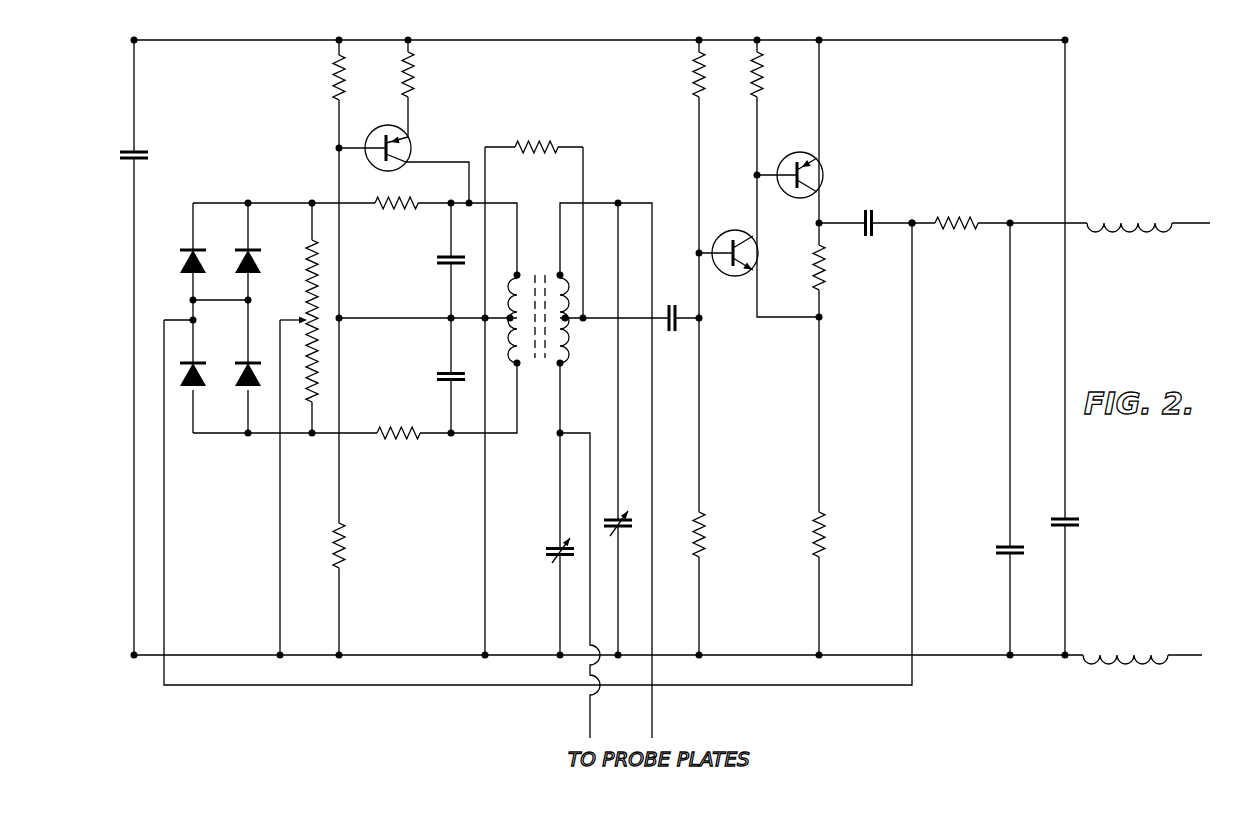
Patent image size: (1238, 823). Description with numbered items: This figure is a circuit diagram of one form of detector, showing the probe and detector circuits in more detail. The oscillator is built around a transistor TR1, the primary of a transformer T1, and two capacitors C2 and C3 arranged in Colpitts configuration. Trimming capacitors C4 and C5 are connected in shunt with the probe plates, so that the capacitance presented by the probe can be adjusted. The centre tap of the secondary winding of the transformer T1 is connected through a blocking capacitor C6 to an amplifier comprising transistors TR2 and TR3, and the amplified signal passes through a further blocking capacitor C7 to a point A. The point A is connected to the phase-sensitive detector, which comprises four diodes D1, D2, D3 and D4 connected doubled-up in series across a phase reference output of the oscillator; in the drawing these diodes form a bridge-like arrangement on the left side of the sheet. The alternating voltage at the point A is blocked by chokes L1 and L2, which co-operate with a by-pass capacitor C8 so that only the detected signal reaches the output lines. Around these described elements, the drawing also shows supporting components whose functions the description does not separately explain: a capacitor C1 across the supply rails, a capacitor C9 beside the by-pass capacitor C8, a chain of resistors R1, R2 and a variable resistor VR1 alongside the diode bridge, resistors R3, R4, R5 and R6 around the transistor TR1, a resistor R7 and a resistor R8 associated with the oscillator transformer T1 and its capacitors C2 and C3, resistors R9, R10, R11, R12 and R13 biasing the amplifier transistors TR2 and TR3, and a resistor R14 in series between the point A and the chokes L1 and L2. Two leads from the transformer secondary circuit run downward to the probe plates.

The capacitor C1 is at (143, 153).
The capacitor C2 is at (436, 266).
The capacitor C3 is at (438, 372).
The trimming capacitor C4 is at (546, 548).
The trimming capacitor C5 is at (628, 530).
The blocking capacitor C6 is at (667, 306).
The further blocking capacitor C7 is at (865, 210).
The by-pass capacitor C8 is at (996, 550).
The capacitor C9 is at (1076, 528).
The resistor R1 is at (300, 262).
The resistor R2 is at (305, 400).
The resistor R3 is at (333, 88).
The resistor R4 is at (344, 546).
The resistor R5 is at (413, 80).
The resistor R6 is at (378, 212).
The resistor R7 is at (400, 428).
The resistor R8 is at (539, 146).
The resistor R9 is at (696, 86).
The resistor R10 is at (762, 78).
The resistor R11 is at (707, 540).
The resistor R12 is at (819, 267).
The resistor R13 is at (826, 540).
The resistor R14 is at (956, 222).
The variable resistor VR1 is at (296, 316).
The diode D1 is at (182, 262).
The diode D2 is at (192, 396).
The diode D3 is at (238, 262).
The diode D4 is at (243, 396).
The transistor TR1 is at (372, 134).
The transistor TR2 is at (722, 234).
The transistor TR3 is at (792, 154).
The transformer T1 is at (536, 272).
The choke L1 is at (1133, 222).
The choke L2 is at (1152, 652).
The point A is at (912, 219).